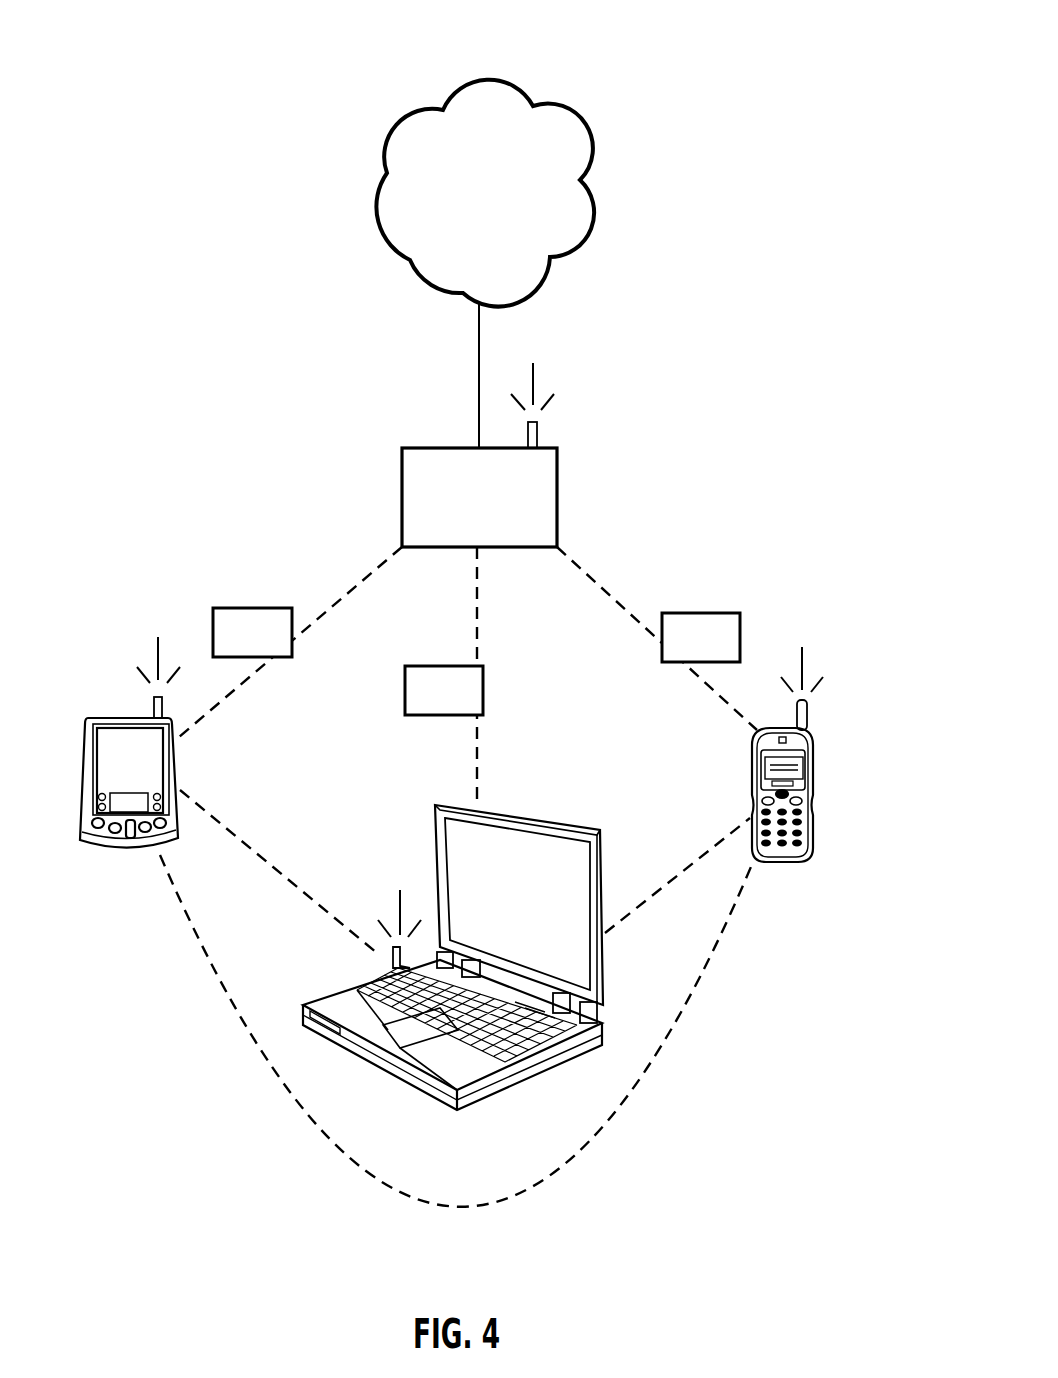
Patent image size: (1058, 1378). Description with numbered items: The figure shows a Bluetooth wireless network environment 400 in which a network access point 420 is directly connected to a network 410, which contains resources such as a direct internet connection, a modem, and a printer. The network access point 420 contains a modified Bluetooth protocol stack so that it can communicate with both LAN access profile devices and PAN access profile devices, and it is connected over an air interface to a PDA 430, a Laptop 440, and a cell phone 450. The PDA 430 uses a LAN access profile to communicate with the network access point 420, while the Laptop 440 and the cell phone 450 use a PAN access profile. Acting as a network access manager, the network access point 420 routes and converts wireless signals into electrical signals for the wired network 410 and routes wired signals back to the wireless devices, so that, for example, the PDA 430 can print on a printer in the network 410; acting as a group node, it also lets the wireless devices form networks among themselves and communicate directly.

The Bluetooth wireless network environment 400 is at (796, 140).
The network 410 is at (557, 128).
The network access point 420 is at (557, 496).
The PDA 430 is at (125, 742).
The Laptop 440 is at (338, 1004).
The cell phone 450 is at (814, 755).